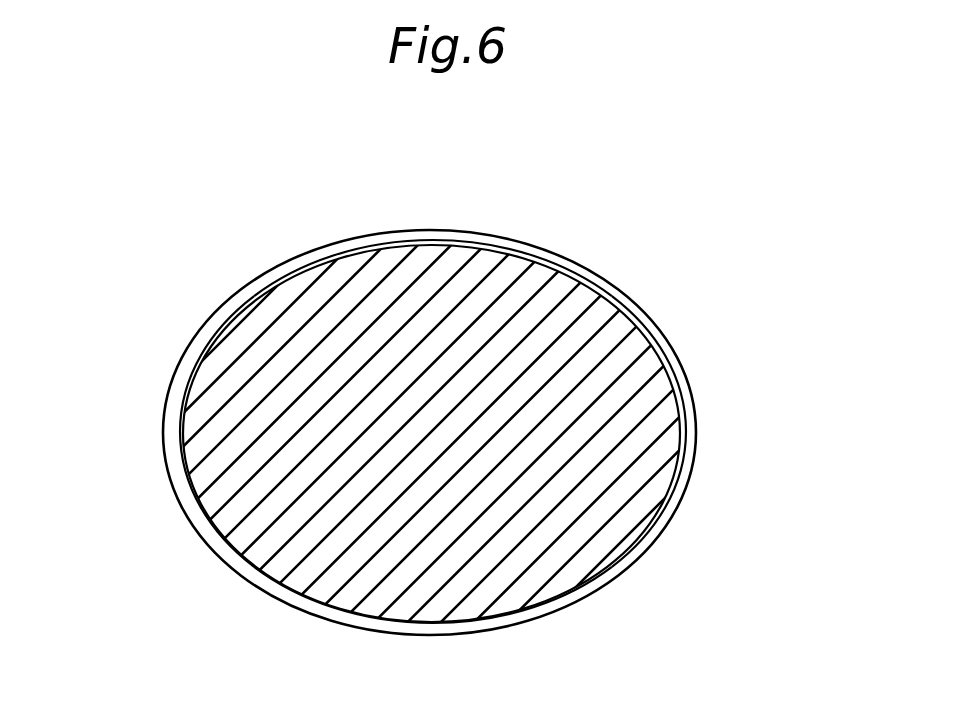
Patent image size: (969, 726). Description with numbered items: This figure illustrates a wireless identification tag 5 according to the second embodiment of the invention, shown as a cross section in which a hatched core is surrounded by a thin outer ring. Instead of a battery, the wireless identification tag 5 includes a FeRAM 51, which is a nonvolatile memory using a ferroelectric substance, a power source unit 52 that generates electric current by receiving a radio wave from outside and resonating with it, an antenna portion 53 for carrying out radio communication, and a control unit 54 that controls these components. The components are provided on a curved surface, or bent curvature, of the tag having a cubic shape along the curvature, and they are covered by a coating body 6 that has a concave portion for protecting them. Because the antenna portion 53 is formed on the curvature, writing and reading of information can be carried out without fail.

The wireless identification tag 5 is at (708, 178).
The coating body 6 is at (535, 243).
The FeRAM 51 is at (167, 433).
The power source unit 52 is at (335, 245).
The antenna portion 53 is at (690, 390).
The control unit 54 is at (355, 630).